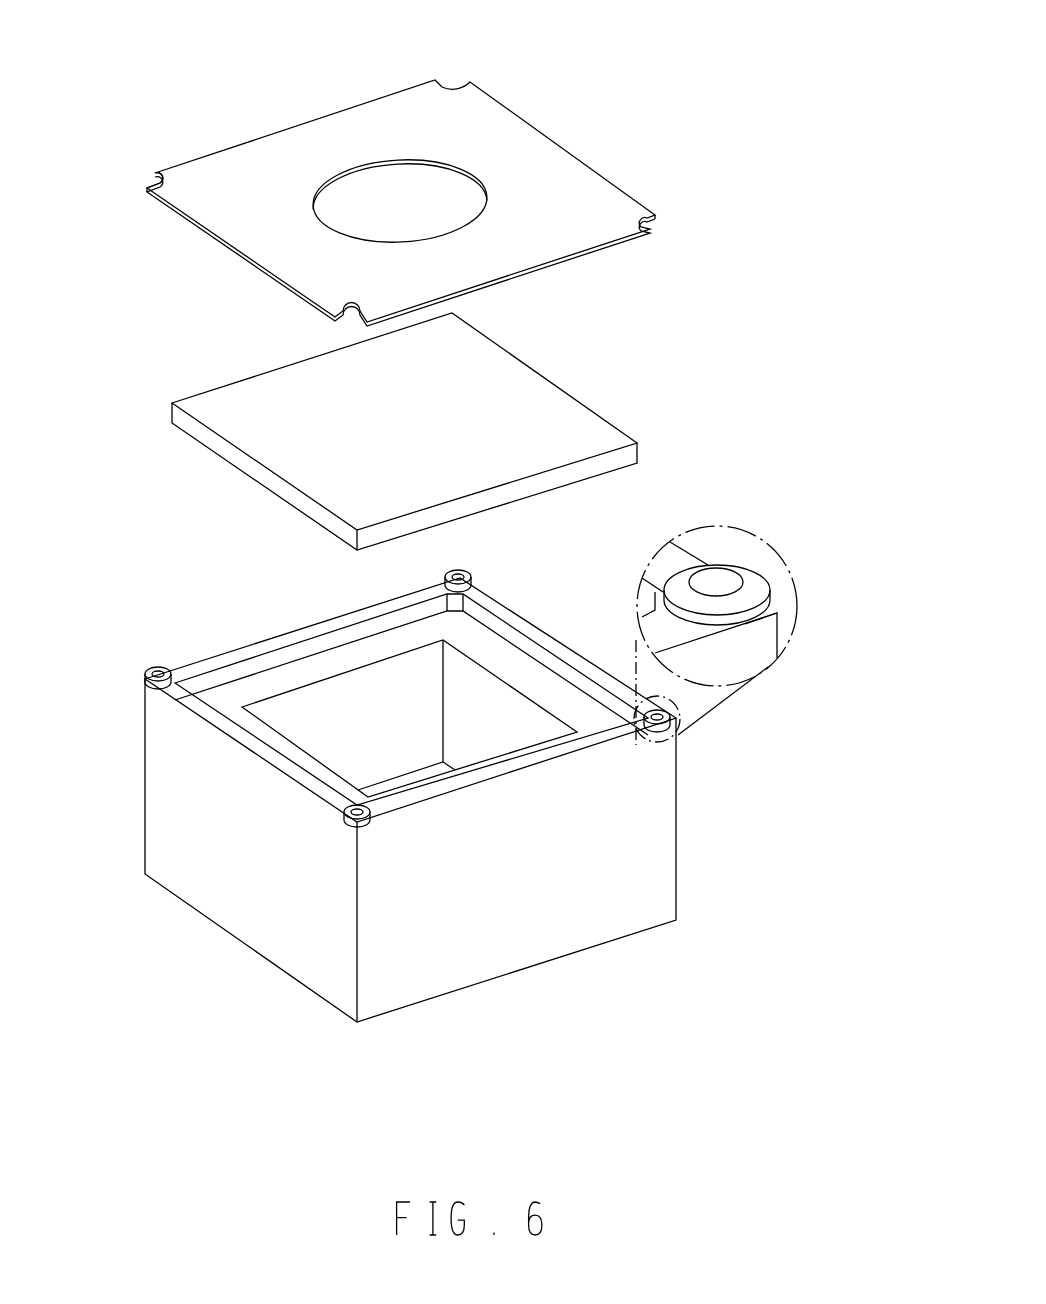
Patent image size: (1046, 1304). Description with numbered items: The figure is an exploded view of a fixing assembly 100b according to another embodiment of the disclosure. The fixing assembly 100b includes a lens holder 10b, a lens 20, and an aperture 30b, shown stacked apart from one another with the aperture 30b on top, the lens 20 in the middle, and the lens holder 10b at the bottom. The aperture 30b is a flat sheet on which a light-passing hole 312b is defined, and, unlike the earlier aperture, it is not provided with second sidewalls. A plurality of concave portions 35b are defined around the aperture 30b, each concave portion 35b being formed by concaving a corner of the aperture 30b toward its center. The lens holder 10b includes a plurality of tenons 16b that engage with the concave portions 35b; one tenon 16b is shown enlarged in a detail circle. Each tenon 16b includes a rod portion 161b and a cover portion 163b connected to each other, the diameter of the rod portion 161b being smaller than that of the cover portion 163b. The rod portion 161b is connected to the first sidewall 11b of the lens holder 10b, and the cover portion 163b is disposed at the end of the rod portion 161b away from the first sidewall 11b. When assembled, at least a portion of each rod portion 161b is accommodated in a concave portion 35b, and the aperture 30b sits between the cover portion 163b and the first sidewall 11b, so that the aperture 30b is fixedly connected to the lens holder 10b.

The fixing assembly 100b is at (414, 24).
The aperture 30b is at (354, 200).
The light-passing hole 312b is at (368, 185).
The concave portions 35b is at (53, 168).
The lens 20 is at (527, 395).
The lens holder 10b is at (543, 774).
The first sidewall 11b is at (638, 803).
The tenons 16b is at (543, 676).
The cover portion 163b is at (718, 578).
The rod portion 161b is at (771, 635).